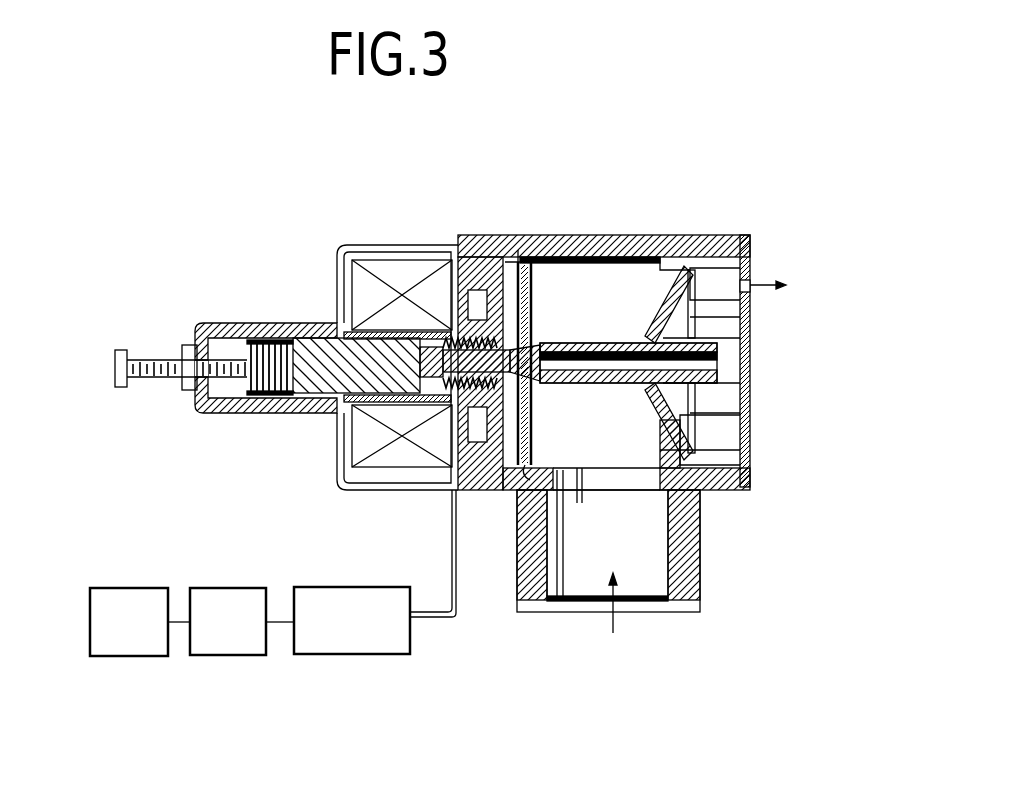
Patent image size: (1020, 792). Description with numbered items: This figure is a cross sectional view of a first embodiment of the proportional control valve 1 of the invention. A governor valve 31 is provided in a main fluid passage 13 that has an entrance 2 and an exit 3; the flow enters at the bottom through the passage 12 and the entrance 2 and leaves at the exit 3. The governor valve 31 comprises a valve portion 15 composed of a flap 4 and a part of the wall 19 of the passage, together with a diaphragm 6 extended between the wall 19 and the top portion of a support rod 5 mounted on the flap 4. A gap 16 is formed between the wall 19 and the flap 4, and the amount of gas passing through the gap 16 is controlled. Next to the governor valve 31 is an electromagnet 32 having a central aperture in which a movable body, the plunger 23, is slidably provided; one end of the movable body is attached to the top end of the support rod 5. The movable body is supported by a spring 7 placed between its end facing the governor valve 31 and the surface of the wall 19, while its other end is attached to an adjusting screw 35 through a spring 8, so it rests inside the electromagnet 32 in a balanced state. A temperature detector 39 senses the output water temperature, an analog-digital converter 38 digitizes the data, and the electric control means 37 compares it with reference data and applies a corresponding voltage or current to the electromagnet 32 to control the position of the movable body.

The valve housing 1 is at (469, 195).
The entrance 2 is at (582, 583).
The exit 3 is at (723, 278).
The flap 4 is at (692, 442).
The support rod 5 is at (574, 340).
The diaphragm 6 is at (538, 250).
The spring 7 is at (453, 400).
The spring 8 is at (248, 412).
The passage 12 is at (578, 497).
The main fluid passage 13 is at (635, 543).
The valve portion 15 is at (647, 307).
The gap 16 is at (698, 262).
The wall 19 is at (662, 237).
The plunger 23 is at (312, 345).
The governor valve 31 is at (600, 272).
The electromagnet 32 is at (395, 265).
The adjusting screw 35 is at (121, 388).
The electric control means 37 is at (338, 620).
The analog-digital converter 38 is at (217, 621).
The temperature detector 39 is at (129, 622).